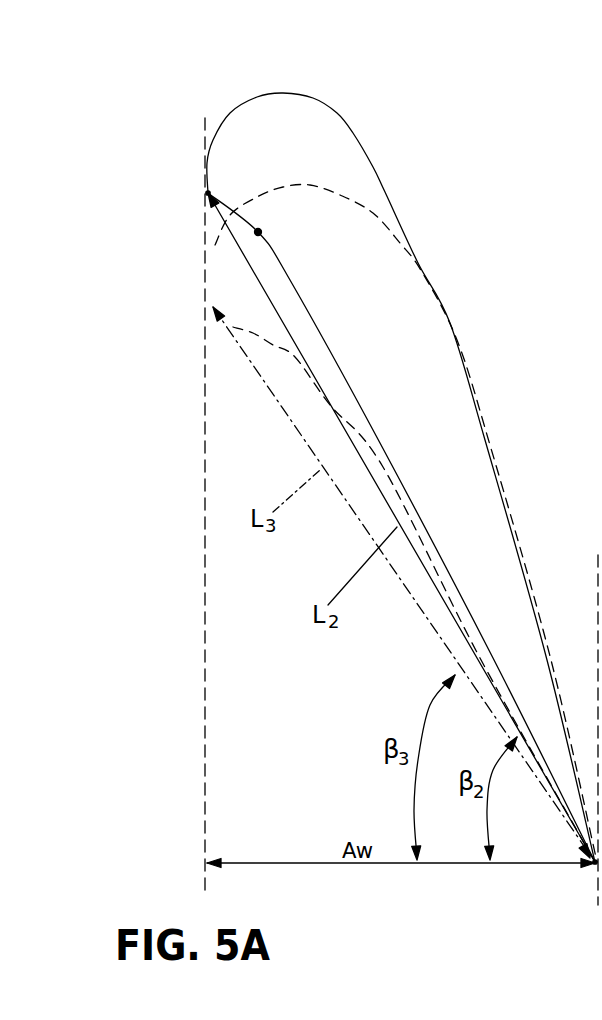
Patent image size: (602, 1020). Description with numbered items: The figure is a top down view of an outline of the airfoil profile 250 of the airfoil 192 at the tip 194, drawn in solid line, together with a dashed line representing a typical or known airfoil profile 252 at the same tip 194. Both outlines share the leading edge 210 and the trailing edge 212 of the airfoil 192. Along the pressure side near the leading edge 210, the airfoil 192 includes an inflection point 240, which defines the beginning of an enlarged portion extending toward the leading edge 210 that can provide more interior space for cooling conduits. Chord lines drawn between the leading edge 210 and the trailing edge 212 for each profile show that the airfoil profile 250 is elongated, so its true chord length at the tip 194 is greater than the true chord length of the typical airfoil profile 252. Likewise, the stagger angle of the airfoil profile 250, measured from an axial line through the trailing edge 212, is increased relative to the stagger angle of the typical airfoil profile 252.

The airfoil 192 is at (402, 468).
The tip 194 is at (350, 132).
The leading edge 210 is at (206, 194).
The trailing edge 212 is at (597, 865).
The inflection point 240 is at (256, 234).
The airfoil profile 250 is at (401, 468).
The typical airfoil profile 252 is at (450, 322).